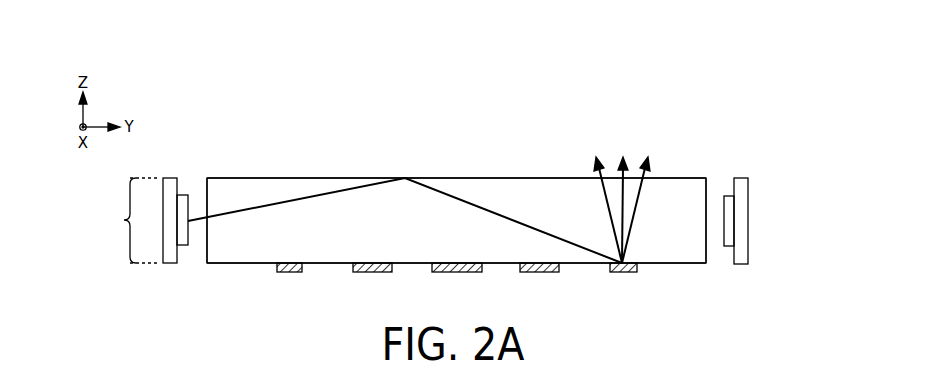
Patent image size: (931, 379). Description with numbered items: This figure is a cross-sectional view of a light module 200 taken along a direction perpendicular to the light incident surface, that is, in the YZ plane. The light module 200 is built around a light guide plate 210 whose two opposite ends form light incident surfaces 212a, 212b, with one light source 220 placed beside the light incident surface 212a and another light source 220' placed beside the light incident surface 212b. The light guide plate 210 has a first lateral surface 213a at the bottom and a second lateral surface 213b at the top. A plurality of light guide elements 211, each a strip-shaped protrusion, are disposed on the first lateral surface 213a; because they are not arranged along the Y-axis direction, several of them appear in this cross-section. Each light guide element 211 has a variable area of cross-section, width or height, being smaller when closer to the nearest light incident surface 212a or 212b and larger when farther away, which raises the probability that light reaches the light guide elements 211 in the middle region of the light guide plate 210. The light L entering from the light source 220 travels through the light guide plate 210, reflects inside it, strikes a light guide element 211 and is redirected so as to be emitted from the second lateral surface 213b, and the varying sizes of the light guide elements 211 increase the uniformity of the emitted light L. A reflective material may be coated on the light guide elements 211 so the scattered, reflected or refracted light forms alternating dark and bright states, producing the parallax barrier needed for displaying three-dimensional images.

The light module 200 is at (123, 220).
The light source 220 is at (172, 199).
The light source 220' is at (750, 199).
The light guide plate 210 is at (493, 247).
The light incident surface 212a is at (206, 252).
The light incident surface 212b is at (706, 252).
The first lateral surface 213a is at (413, 264).
The second lateral surface 213b is at (522, 178).
The light guide elements 211 is at (289, 272).
The light L is at (419, 200).